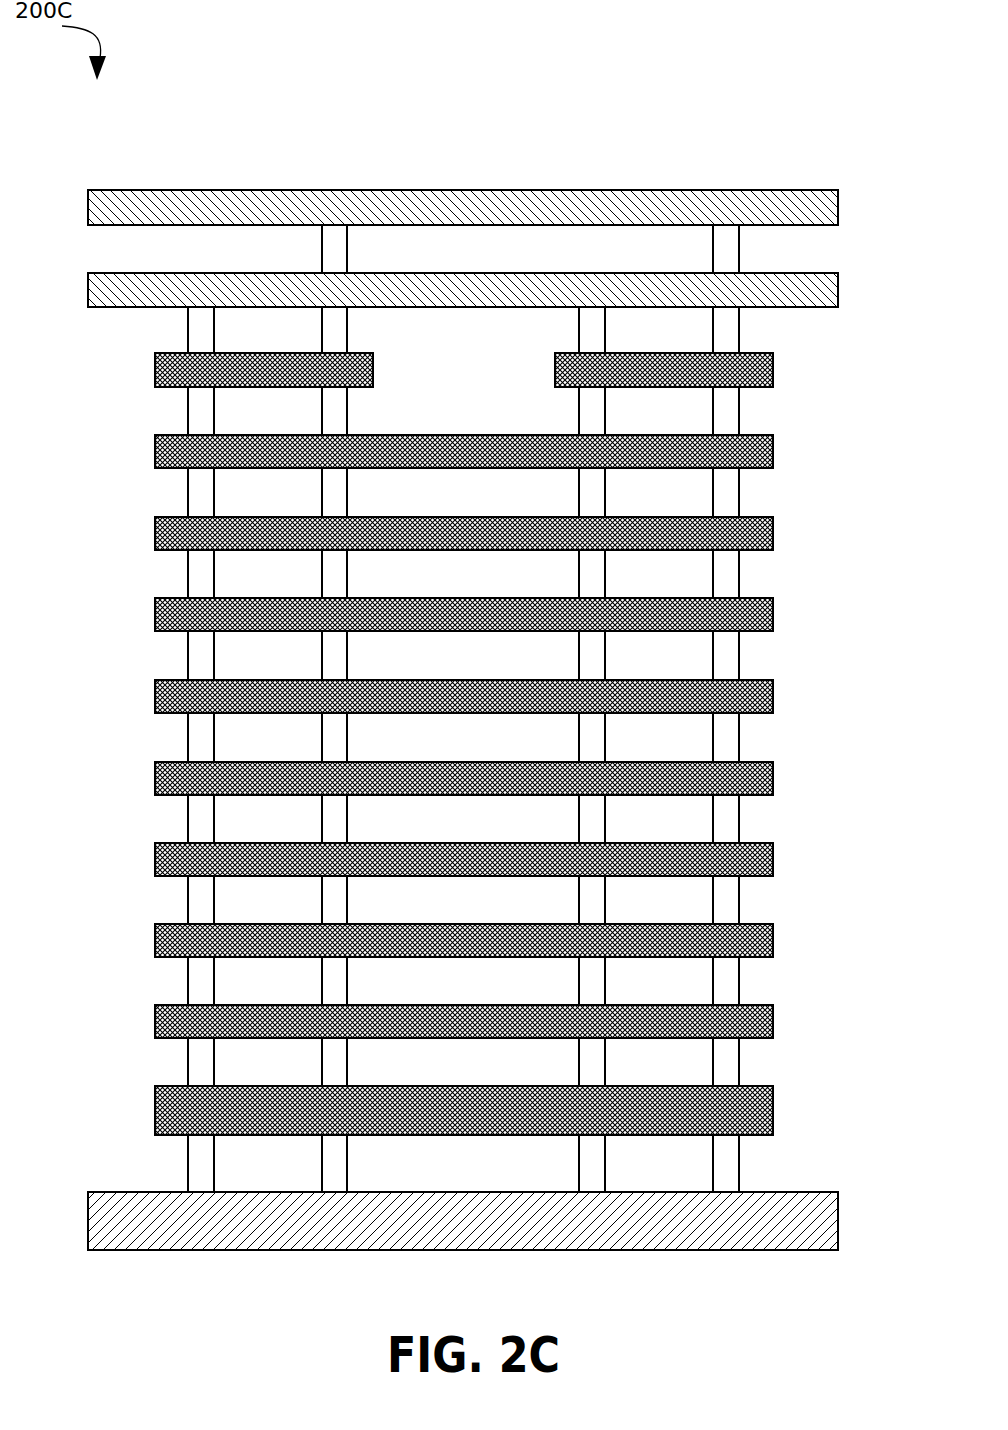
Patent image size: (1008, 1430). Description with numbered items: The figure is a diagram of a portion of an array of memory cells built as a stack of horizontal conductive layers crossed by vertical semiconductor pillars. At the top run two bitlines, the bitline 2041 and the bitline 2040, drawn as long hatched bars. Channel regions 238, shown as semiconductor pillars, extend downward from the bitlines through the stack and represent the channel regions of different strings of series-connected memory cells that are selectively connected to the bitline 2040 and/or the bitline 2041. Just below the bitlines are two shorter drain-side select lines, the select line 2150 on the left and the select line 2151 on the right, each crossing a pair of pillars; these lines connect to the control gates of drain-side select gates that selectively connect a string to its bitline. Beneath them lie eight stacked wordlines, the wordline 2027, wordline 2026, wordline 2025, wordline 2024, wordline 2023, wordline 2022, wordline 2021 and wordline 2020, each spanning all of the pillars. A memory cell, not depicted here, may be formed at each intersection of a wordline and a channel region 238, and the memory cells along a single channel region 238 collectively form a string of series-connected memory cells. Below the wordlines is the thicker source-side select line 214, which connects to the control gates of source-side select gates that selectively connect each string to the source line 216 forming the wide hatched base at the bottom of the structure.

The bitline 2041 is at (218, 190).
The bitline 2040 is at (805, 273).
The channel region 238 is at (187, 342).
The select line 2150 is at (156, 362).
The select line 2151 is at (773, 368).
The wordline 2027 is at (155, 452).
The wordline 2026 is at (155, 534).
The wordline 2025 is at (155, 615).
The wordline 2024 is at (155, 697).
The wordline 2023 is at (155, 779).
The wordline 2022 is at (155, 860).
The wordline 2021 is at (155, 941).
The wordline 2020 is at (155, 1022).
The select line 214 is at (155, 1109).
The source line 216 is at (133, 1192).